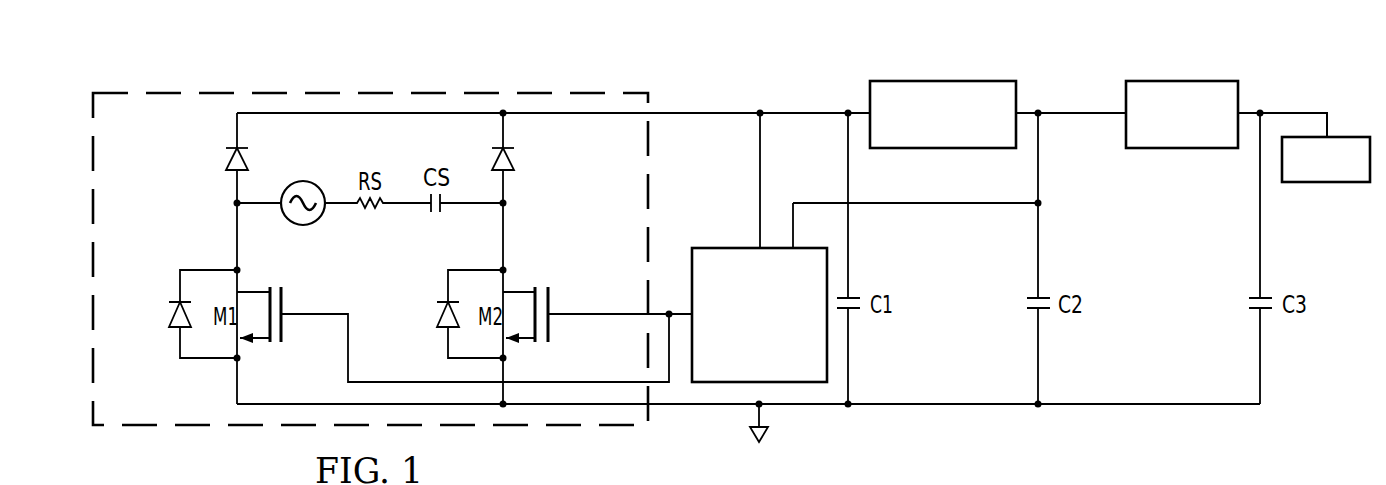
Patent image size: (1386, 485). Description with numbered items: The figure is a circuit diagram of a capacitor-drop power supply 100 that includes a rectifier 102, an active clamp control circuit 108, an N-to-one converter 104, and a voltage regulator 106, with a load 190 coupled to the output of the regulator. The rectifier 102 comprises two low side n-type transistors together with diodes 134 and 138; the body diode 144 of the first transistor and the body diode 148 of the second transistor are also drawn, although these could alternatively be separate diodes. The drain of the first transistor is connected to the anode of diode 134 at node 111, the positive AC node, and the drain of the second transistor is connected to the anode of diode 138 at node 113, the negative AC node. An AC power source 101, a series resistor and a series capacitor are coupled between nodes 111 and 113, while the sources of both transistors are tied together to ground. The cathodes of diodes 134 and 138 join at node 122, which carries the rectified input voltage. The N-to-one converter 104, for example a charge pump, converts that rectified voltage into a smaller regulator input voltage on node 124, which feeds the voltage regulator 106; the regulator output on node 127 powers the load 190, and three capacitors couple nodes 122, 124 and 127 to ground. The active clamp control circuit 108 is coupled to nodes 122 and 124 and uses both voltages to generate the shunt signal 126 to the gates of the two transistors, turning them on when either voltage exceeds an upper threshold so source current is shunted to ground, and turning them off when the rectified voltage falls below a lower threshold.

The capacitor-drop power supply 100 is at (219, 53).
The rectifier 102 is at (366, 79).
The AC power source 101 is at (318, 223).
The N:1 converter 104 is at (943, 78).
The voltage regulator 106 is at (1182, 78).
The active clamp control circuit 108 is at (732, 245).
The node 111 is at (240, 213).
The node 113 is at (500, 212).
The node 122 is at (847, 110).
The node 124 is at (1042, 118).
The SHUNT signal 126 is at (597, 318).
The node 127 is at (1265, 110).
The diode 134 is at (243, 152).
The diode 138 is at (512, 155).
The body diode 144 is at (170, 312).
The body diode 148 is at (437, 312).
The load 190 is at (1348, 135).